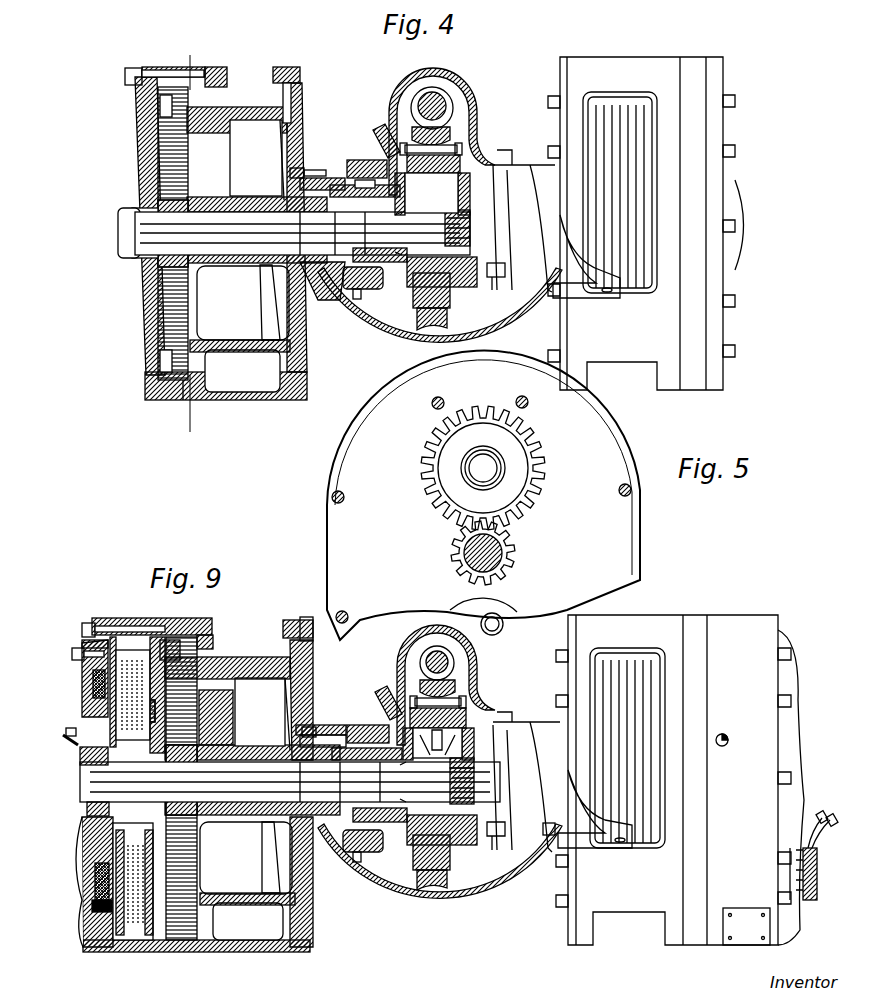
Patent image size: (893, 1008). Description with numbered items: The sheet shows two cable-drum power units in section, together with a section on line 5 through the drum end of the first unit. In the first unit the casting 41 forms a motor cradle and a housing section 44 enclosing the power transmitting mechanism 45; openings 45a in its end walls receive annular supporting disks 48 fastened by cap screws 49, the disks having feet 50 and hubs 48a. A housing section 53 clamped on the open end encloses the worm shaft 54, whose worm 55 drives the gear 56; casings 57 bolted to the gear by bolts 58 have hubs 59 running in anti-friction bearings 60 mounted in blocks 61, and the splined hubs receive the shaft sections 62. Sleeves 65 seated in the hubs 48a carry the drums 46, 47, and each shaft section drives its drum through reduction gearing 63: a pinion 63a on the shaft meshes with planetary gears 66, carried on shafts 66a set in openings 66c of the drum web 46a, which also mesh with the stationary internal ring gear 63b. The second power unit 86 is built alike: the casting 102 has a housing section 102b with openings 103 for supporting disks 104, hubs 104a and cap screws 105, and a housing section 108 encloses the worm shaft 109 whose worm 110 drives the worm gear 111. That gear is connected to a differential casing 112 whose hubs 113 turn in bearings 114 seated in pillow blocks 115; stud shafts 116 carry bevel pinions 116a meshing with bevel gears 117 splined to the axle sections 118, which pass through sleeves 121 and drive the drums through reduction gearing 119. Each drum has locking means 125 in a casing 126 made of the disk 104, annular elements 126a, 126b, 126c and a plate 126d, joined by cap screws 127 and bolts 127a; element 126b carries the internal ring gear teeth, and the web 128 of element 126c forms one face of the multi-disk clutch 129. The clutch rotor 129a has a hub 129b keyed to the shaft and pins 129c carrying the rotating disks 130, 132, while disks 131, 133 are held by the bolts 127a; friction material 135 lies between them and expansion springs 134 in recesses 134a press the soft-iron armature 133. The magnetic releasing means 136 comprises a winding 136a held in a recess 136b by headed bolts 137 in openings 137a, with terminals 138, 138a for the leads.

In FIG. 4, the section line 5— 5 is at (192, 237).
In FIG. 4, the casting 41 is at (524, 221).
In FIG. 4, the housing section 44 is at (400, 338).
In FIG. 4, the power transmitting mechanism 45 is at (487, 240).
In FIG. 4, the openings 45a is at (342, 300).
In FIG. 4, the drum 46 is at (245, 108).
In FIG. 4, the drum web 46a is at (224, 315).
In FIG. 4, the drum 47 is at (638, 162).
In FIG. 4, the annular supporting disk 48 is at (298, 118).
In FIG. 4, the hub 48a is at (300, 185).
In FIG. 4, the cap screw 49 is at (312, 168).
In FIG. 4, the foot 50 is at (600, 298).
In FIG. 9, the foot 50 is at (580, 845).
In FIG. 4, the housing section 53 is at (470, 99).
In FIG. 4, the worm shaft 54 is at (440, 101).
In FIG. 4, the worm 55 is at (446, 104).
In FIG. 4, the gear 56 is at (448, 137).
In FIG. 4, the casing 57 is at (462, 268).
In FIG. 4, the bolt 58 is at (412, 148).
In FIG. 4, the hub 59 is at (392, 270).
In FIG. 4, the anti-friction bearing 60 is at (366, 165).
In FIG. 4, the block 61 is at (492, 250).
In FIG. 4, the shaft section 62 is at (503, 208).
In FIG. 4, the reduction gearing 63 is at (184, 233).
In FIG. 4, the pinion 63a is at (160, 262).
In FIG. 5, the pinion 63a is at (512, 556).
In FIG. 4, the internal ring gear 63b is at (180, 388).
In FIG. 5, the internal ring gear 63b is at (360, 490).
In FIG. 4, the sleeve 65 is at (275, 266).
In FIG. 4, the gear 66 is at (160, 93).
In FIG. 5, the gear 66 is at (460, 498).
In FIG. 5, the shaft 66a is at (495, 470).
In FIG. 4, the opening 66c is at (208, 122).
In FIG. 9, the power unit 86 is at (519, 809).
In FIG. 9, the casting 102 is at (440, 872).
In FIG. 9, the housing section 102b is at (378, 880).
In FIG. 9, the opening 103 is at (345, 845).
In FIG. 9, the annular supporting disk 104 is at (312, 668).
In FIG. 9, the hub 104a is at (296, 745).
In FIG. 9, the cap screw 105 is at (325, 728).
In FIG. 9, the housing section 108 is at (477, 666).
In FIG. 9, the worm shaft 109 is at (420, 660).
In FIG. 9, the worm 110 is at (446, 655).
In FIG. 9, the worm gear 111 is at (420, 686).
In FIG. 9, the casing 112 is at (462, 702).
In FIG. 9, the hub 113 is at (475, 760).
In FIG. 9, the bearing 114 is at (378, 726).
In FIG. 9, the pillow block 115 is at (500, 766).
In FIG. 9, the stud shaft 116 is at (420, 712).
In FIG. 9, the bevel pinion 116a is at (470, 745).
In FIG. 9, the bevel gear 117 is at (475, 818).
In FIG. 9, the axle section 118 is at (517, 786).
In FIG. 9, the reduction gearing 119 is at (214, 847).
In FIG. 9, the sleeve 121 is at (284, 824).
In FIG. 9, the locking or holding means 125 is at (132, 650).
In FIG. 9, the casing 126 is at (443, 784).
In FIG. 9, the annular casing element 126a is at (290, 947).
In FIG. 9, the annular casing element 126b is at (184, 950).
In FIG. 9, the annular casing element 126c is at (168, 945).
In FIG. 9, the plate 126d is at (102, 950).
In FIG. 9, the cap screw 127 is at (305, 625).
In FIG. 9, the bolt 127a is at (175, 645).
In FIG. 9, the web 128 is at (168, 880).
In FIG. 9, the multi-disk clutch 129 is at (133, 881).
In FIG. 9, the rotor 129a is at (170, 836).
In FIG. 9, the hub 129b is at (80, 765).
In FIG. 9, the pin 129c is at (138, 722).
In FIG. 9, the clutch disk 130 is at (160, 640).
In FIG. 9, the clutch disk 131 is at (116, 640).
In FIG. 9, the clutch disk 132 is at (92, 708).
In FIG. 9, the annular member 133 is at (110, 625).
In FIG. 9, the expansion spring 134 is at (95, 910).
In FIG. 9, the recess 134a is at (95, 890).
In FIG. 9, the friction material 135 is at (200, 668).
In FIG. 9, the releasing means 136 is at (80, 882).
In FIG. 9, the winding 136a is at (93, 680).
In FIG. 9, the recess 136b is at (90, 840).
In FIG. 9, the headed bolt 137 is at (74, 655).
In FIG. 9, the opening 137a is at (82, 628).
In FIG. 9, the terminal 138 is at (819, 864).
In FIG. 9, the terminal 138a is at (830, 905).